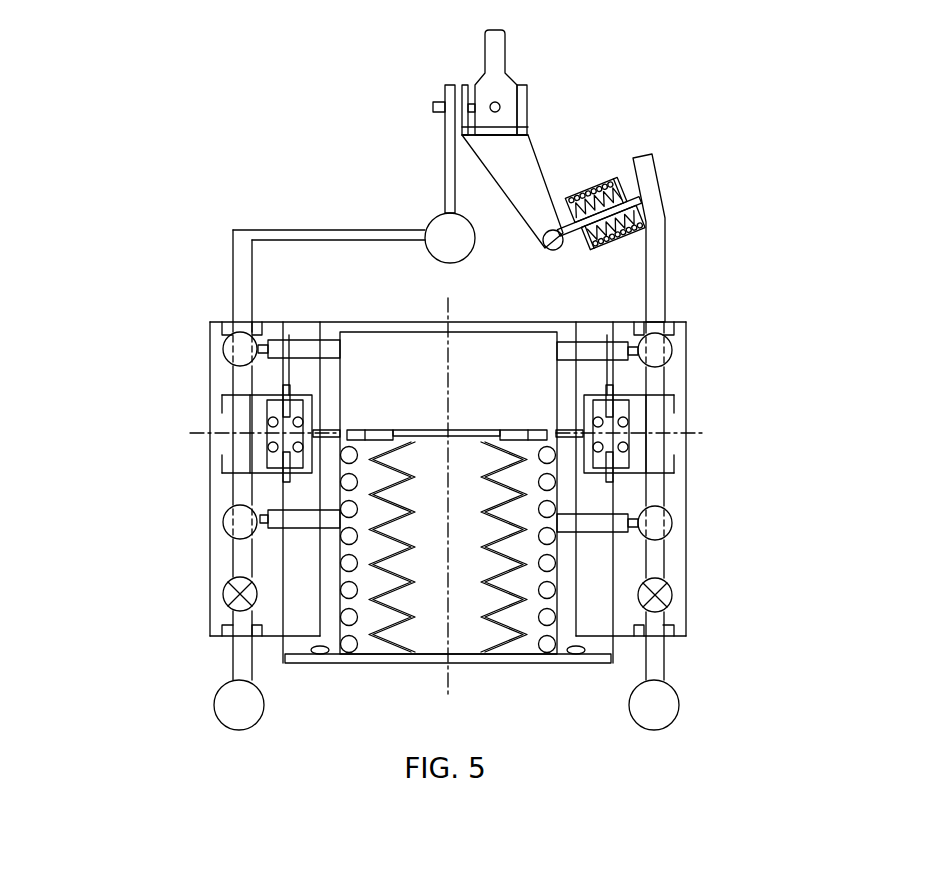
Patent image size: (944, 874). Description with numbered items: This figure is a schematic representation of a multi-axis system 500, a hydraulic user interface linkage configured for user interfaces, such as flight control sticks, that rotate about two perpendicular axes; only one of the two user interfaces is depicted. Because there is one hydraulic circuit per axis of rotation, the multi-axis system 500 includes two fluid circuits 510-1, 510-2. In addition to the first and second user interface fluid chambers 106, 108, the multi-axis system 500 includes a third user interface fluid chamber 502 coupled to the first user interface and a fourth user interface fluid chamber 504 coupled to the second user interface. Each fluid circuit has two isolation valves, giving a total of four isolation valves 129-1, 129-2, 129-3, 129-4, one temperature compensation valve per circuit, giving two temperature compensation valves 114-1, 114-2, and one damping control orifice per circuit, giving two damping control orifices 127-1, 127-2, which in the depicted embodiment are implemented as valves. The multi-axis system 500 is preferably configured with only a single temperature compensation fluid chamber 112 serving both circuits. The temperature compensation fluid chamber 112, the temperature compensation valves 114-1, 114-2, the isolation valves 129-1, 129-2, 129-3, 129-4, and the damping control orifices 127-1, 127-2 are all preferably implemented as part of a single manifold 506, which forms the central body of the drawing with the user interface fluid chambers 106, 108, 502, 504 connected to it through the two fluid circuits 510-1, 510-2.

The multi-axis system 500 is at (451, 380).
The third user interface fluid chamber 502 is at (646, 227).
The manifold 506 is at (451, 471).
The first user interface fluid chamber 106 is at (456, 258).
The temperature compensation fluid chamber 112 is at (461, 468).
The isolation valve 129-1 is at (222, 523).
The isolation valve 129-2 is at (222, 351).
The isolation valve 129-3 is at (674, 525).
The isolation valve 129-4 is at (674, 352).
The temperature compensation valve 114-1 is at (253, 432).
The temperature compensation valve 114-2 is at (645, 429).
The fluid circuit 510-1 is at (112, 490).
The fluid circuit 510-2 is at (787, 493).
The damping control orifice 127-1 is at (180, 594).
The damping control orifice 127-2 is at (715, 596).
The second user interface fluid chamber 108 is at (230, 704).
The fourth user interface fluid chamber 504 is at (668, 703).